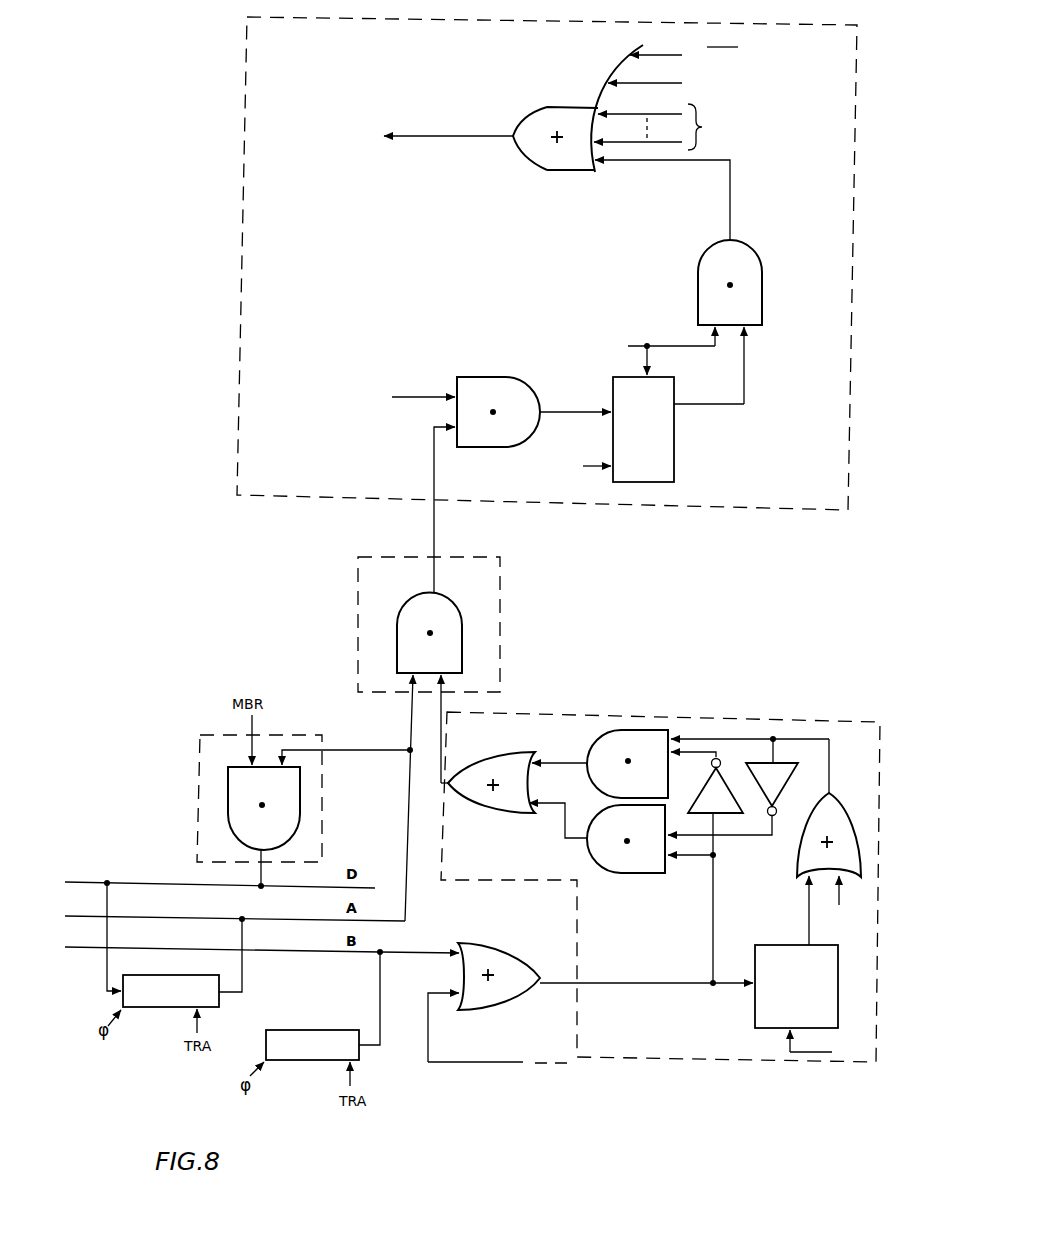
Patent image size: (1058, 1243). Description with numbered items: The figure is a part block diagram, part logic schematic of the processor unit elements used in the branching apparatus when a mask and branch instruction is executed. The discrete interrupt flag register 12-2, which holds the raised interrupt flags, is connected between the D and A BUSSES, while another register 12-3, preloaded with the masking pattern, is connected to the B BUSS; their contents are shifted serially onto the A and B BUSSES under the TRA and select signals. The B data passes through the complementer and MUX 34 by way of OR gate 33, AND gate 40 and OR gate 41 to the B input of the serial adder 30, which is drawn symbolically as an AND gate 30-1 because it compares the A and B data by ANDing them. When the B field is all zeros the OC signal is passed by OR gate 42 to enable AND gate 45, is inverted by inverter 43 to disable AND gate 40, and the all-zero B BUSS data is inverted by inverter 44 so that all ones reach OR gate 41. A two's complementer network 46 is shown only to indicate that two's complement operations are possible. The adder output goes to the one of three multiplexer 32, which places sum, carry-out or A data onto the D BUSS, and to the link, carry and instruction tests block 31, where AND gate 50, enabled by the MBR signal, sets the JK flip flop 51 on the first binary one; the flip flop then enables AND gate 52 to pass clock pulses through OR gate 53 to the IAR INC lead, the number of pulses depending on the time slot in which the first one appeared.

The link, carry and instruction tests block 31 is at (243, 256).
The OR gate 53 is at (545, 171).
The AND gate 52 is at (763, 285).
The JK flip flop 51 is at (648, 483).
The AND gate 50 is at (493, 376).
The serial adder 30 is at (360, 557).
The AND gate 30-1 is at (416, 592).
The one of three multiplexer 32 is at (200, 762).
The complementer and MUX 34 is at (608, 1060).
The OR gate 33 is at (522, 990).
The AND gate 40 is at (640, 874).
The OR gate 41 is at (493, 814).
The OR gate 42 is at (822, 812).
The inverter 43 is at (785, 789).
The inverter 44 is at (706, 800).
The AND gate 45 is at (643, 729).
The two's complementer network 46 is at (755, 1016).
The discrete interrupt flag register 12-2 is at (150, 1007).
The register 12-3 is at (300, 1061).